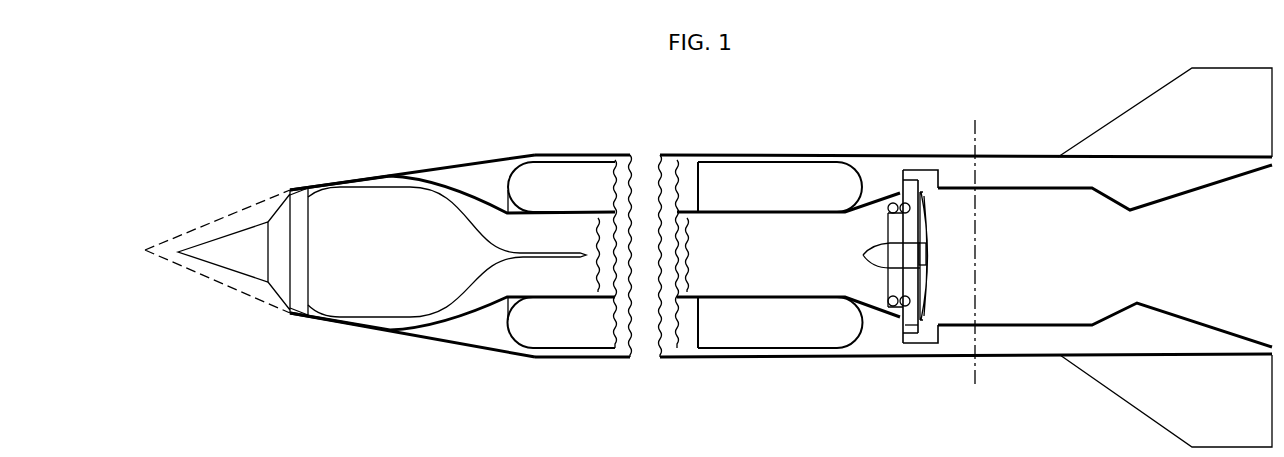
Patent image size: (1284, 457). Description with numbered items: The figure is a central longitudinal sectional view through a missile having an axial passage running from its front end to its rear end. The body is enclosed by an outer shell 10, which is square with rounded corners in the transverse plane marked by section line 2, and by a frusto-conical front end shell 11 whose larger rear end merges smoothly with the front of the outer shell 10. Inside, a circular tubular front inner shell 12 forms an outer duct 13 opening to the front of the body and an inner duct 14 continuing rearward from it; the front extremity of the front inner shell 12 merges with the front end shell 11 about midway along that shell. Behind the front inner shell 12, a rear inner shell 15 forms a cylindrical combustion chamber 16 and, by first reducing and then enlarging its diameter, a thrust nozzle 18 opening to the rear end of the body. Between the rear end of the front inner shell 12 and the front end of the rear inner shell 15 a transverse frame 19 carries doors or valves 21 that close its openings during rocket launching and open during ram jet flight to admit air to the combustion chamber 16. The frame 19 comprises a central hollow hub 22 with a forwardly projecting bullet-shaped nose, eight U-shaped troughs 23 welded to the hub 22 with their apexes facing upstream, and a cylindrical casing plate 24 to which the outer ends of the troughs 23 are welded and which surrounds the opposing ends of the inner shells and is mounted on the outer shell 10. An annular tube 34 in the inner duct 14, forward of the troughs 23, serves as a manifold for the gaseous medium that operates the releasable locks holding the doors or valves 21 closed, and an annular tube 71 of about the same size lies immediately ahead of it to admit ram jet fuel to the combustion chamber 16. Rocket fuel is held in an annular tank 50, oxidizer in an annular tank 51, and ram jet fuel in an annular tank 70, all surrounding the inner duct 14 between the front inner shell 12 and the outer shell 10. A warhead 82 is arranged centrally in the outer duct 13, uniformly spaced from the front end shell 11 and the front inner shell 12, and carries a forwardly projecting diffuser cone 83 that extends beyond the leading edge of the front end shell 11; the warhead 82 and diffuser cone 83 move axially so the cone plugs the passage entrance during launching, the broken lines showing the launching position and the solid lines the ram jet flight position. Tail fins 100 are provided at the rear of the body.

The section line 2- 2 is at (930, 372).
The outer shell 10 is at (556, 153).
The front end shell 11 is at (440, 166).
The front inner shell 12 is at (484, 200).
The outer duct 13 is at (447, 252).
The inner duct 14 is at (658, 255).
The rear inner shell 15 is at (1045, 186).
The combustion chamber 16 is at (1055, 255).
The thrust nozzle 18 is at (1203, 255).
The frame 19 is at (928, 257).
The doors or valves 21 is at (932, 212).
The hollow hub 22 is at (876, 262).
The U-shaped troughs 23 is at (905, 344).
The casing plate 24 is at (915, 168).
The annular tube 34 is at (897, 202).
The annular tank 50 is at (592, 165).
The annular tank 51 is at (686, 172).
The annular tank 70 is at (785, 168).
The annular tube 71 is at (888, 212).
The warhead 82 is at (360, 310).
The diffuser cone 83 is at (248, 288).
The tail fins 100 is at (1165, 257).